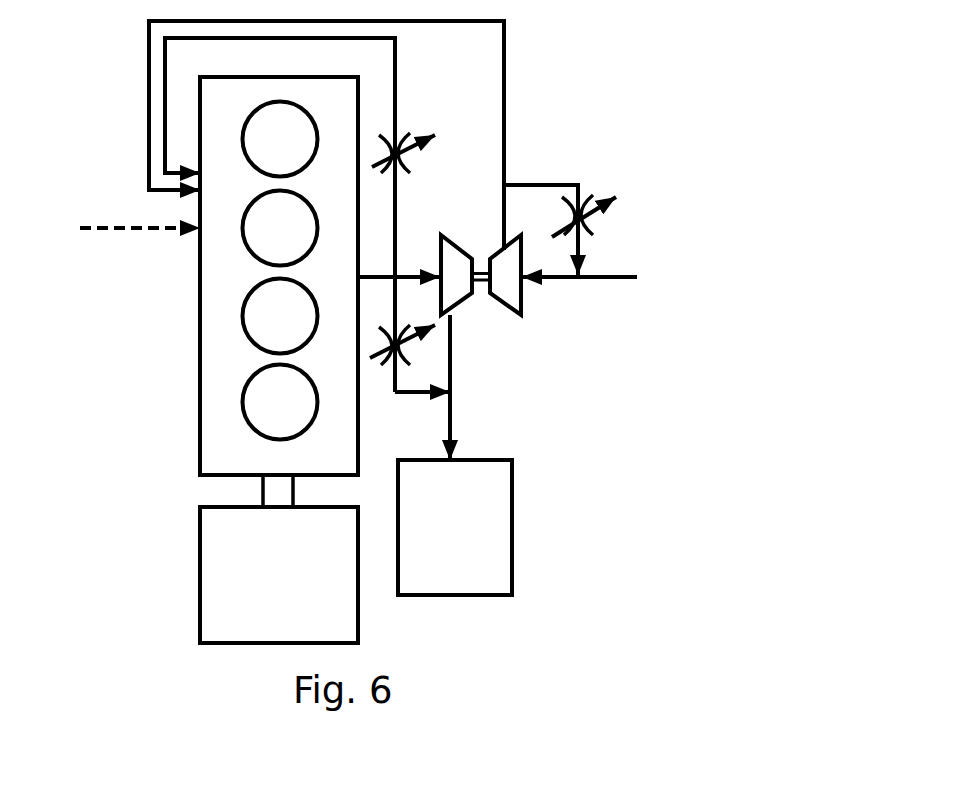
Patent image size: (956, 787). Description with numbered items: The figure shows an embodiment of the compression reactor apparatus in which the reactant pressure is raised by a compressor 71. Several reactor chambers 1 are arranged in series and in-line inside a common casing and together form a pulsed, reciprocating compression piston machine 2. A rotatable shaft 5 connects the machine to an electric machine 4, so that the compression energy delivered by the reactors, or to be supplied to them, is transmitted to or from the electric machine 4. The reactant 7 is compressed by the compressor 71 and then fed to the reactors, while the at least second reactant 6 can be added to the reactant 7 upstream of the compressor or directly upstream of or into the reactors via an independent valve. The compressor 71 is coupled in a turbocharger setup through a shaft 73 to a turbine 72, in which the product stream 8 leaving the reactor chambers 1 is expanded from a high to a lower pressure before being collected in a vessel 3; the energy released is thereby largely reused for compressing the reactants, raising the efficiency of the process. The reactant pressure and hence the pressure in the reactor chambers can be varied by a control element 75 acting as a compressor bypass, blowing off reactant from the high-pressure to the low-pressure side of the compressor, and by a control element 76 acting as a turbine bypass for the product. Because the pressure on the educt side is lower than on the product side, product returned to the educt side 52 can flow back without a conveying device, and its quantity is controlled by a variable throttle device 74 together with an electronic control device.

The reactor chambers 1 is at (280, 407).
The compression piston machine 2 is at (263, 455).
The vessel 3 is at (455, 527).
The electric machine 4 is at (317, 593).
The shaft 5 is at (285, 490).
The reactant 6 is at (140, 216).
The reactant 7 is at (407, 163).
The products 8 is at (433, 387).
The product returned to the educt side 52 is at (307, 215).
The compressor 71 is at (523, 293).
The turbine 72 is at (453, 312).
The shaft 73 is at (487, 288).
The variable throttle device 74 is at (418, 164).
The control element 75 is at (594, 226).
The control element 76 is at (410, 343).